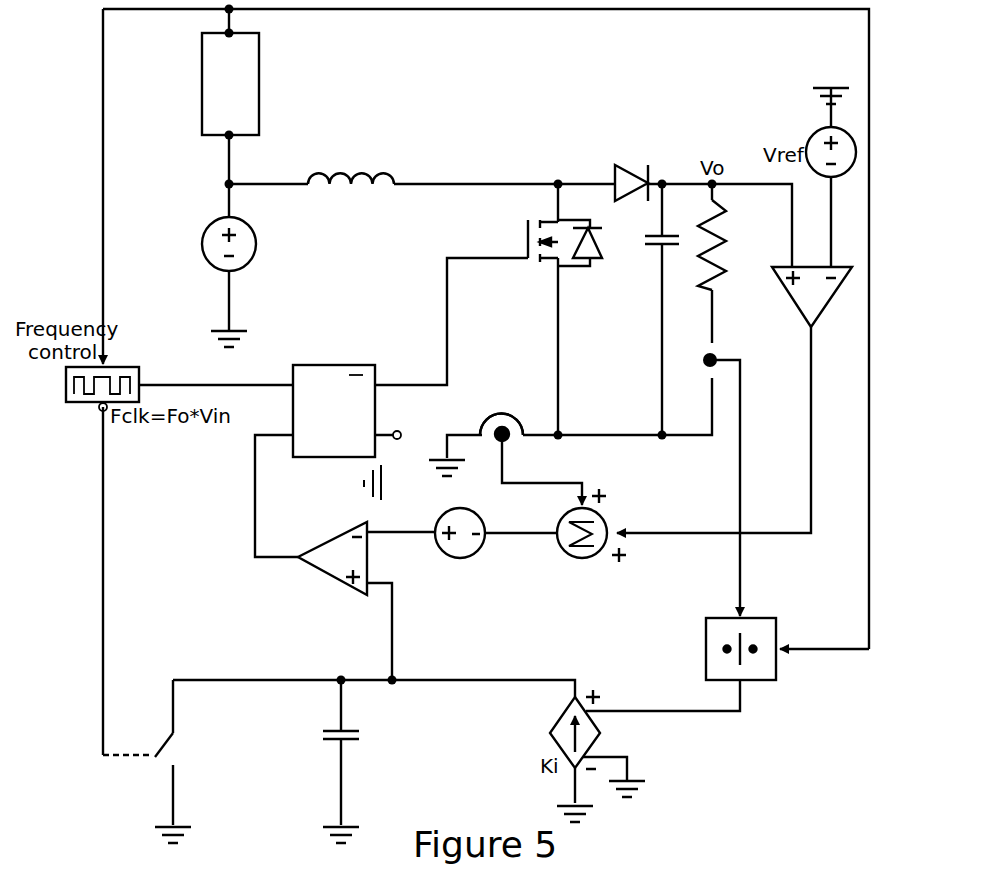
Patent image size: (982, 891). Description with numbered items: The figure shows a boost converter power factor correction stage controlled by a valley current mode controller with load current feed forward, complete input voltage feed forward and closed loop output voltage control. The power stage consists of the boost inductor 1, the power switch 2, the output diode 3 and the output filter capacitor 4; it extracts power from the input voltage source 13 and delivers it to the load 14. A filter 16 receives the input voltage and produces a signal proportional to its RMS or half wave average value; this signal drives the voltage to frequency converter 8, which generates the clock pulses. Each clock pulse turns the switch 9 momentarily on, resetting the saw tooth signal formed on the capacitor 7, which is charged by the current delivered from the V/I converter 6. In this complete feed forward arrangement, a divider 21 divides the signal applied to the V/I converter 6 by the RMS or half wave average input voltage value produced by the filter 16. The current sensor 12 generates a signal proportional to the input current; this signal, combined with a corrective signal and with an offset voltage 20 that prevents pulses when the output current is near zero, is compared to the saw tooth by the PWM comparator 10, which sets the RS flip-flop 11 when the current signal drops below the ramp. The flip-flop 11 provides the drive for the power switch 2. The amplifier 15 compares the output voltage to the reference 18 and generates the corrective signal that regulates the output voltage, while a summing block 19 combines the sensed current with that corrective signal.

The boost inductor 1 is at (343, 168).
The power switch 2 is at (522, 240).
The output diode 3 is at (628, 171).
The output filter capacitor 4 is at (648, 241).
The V/I converter 6 is at (598, 737).
The capacitor 7 is at (353, 743).
The clock 8 is at (141, 378).
The switch 9 is at (155, 772).
The PWM comparator 10 is at (328, 542).
The RS flip-flop 11 is at (302, 363).
The current sensor 12 is at (487, 418).
The input voltage source 13 is at (211, 229).
The load 14 is at (727, 253).
The amplifier 15 is at (790, 297).
The filter 16 is at (259, 63).
The reference 18 is at (817, 130).
The summing circuit 19 is at (570, 557).
The offset voltage 20 is at (448, 557).
The divider 21 is at (705, 638).